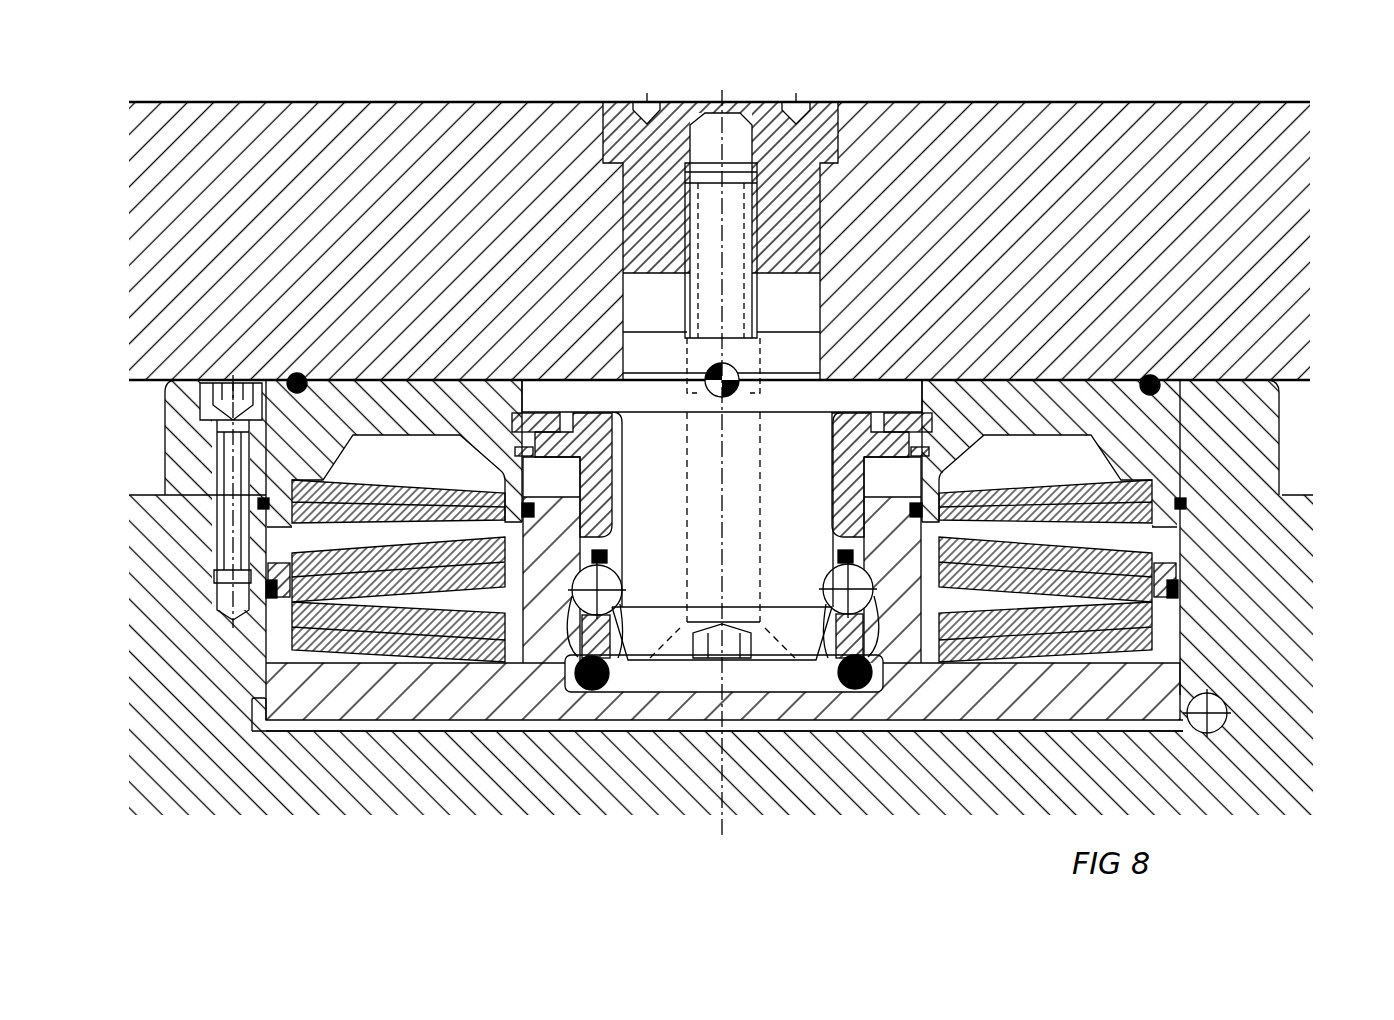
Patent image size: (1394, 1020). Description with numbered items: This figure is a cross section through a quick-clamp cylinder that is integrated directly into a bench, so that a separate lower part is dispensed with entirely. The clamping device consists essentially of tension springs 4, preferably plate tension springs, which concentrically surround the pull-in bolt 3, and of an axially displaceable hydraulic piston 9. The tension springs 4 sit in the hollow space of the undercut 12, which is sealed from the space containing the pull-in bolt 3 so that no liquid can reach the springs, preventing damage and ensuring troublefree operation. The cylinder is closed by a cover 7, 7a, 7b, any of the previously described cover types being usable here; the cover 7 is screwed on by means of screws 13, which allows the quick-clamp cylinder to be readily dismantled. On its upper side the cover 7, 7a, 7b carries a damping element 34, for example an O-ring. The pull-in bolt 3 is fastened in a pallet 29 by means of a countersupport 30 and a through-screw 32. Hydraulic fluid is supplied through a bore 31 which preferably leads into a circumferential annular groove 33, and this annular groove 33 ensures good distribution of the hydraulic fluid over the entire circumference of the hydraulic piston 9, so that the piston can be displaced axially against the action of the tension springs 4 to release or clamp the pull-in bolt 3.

The pull-in bolt 3 is at (797, 570).
The tension springs 4 is at (368, 652).
The cover 7 is at (722, 279).
The cover 7a is at (349, 453).
The cover 7b is at (1222, 408).
The hydraulic piston 9 is at (537, 680).
The undercut 12 is at (437, 452).
The screws 13 is at (172, 436).
The pallet 29 is at (1000, 185).
The countersupport 30 is at (806, 143).
The bore 31 is at (1226, 703).
The through-screw 32 is at (733, 215).
The annular groove 33 is at (252, 717).
The damping element 34 is at (294, 375).